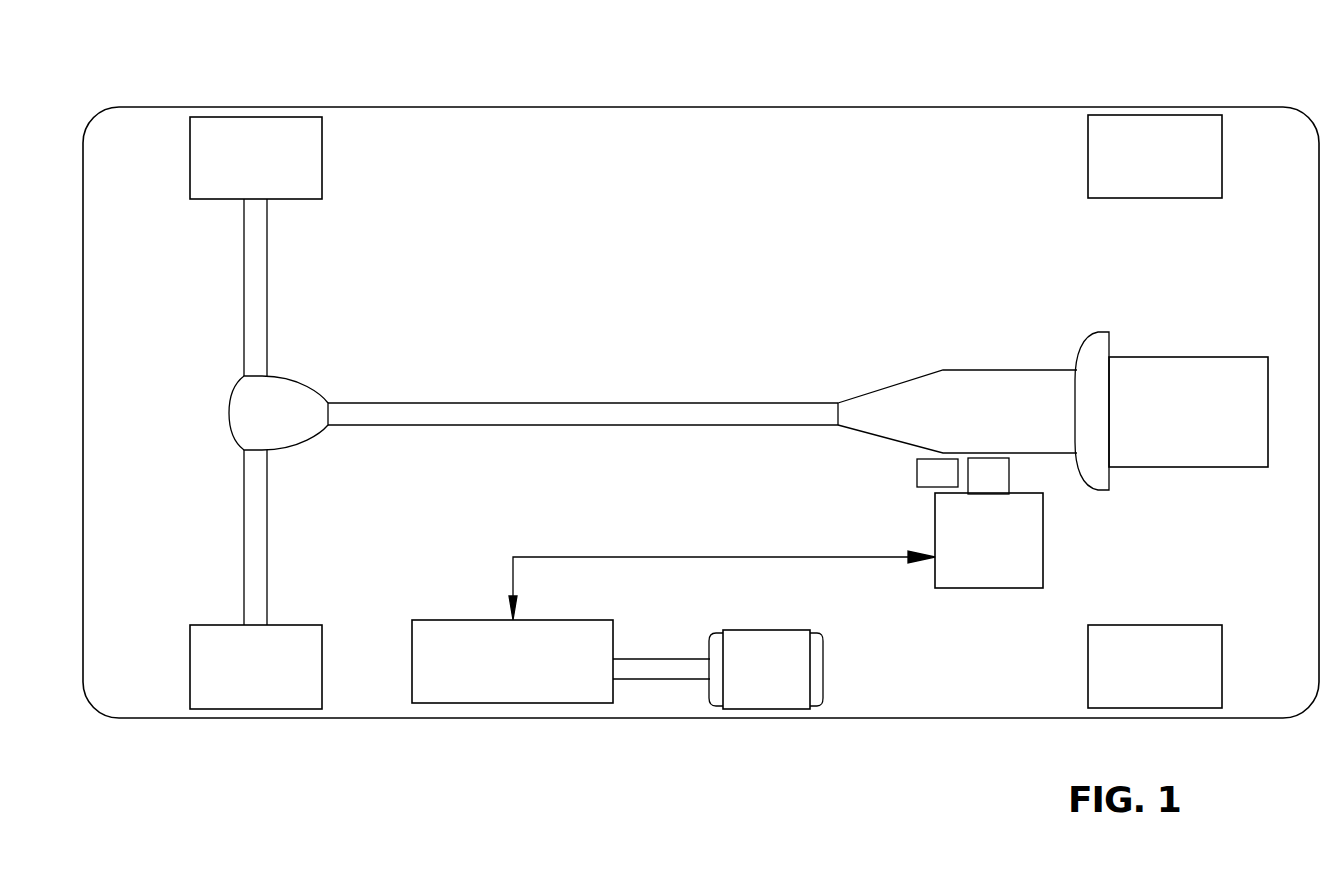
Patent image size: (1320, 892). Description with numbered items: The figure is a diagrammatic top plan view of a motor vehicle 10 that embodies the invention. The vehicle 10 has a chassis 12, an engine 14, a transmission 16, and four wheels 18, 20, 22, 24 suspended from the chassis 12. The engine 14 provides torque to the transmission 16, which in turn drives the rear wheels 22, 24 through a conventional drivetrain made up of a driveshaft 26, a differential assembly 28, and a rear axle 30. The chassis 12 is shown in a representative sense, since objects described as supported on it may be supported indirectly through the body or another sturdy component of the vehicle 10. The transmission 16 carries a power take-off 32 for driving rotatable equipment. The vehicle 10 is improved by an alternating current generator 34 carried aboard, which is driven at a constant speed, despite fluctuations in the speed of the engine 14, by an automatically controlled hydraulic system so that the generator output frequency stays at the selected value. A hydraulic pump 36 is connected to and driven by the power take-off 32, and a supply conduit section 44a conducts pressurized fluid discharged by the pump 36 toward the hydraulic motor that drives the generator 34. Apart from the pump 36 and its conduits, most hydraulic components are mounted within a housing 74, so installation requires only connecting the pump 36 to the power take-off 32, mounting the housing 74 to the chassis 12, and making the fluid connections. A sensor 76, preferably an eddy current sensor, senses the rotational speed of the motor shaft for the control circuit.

The motor vehicle 10 is at (160, 765).
The chassis 12 is at (643, 106).
The engine 14 is at (1204, 424).
The transmission 16 is at (1032, 424).
The wheel 18 is at (1172, 172).
The wheel 20 is at (1172, 682).
The wheel 22 is at (274, 682).
The wheel 24 is at (274, 174).
The driveshaft 26 is at (590, 403).
The differential assembly 28 is at (282, 428).
The rear axle 30 is at (195, 332).
The power take-off 32 is at (1005, 475).
The alternating current generator 34 is at (823, 660).
The hydraulic pump 36 is at (949, 588).
The supply conduit section 44a is at (805, 557).
The housing 74 is at (528, 666).
The sensor 76 is at (923, 476).